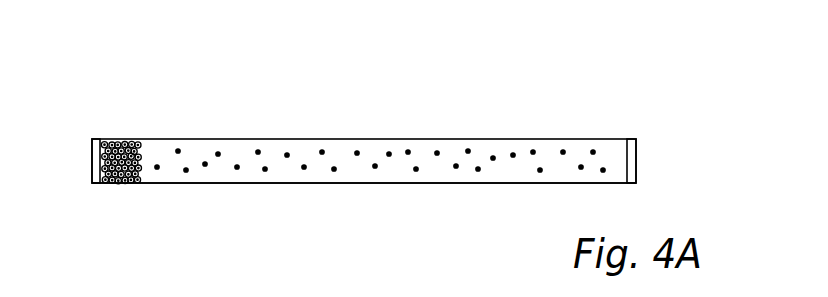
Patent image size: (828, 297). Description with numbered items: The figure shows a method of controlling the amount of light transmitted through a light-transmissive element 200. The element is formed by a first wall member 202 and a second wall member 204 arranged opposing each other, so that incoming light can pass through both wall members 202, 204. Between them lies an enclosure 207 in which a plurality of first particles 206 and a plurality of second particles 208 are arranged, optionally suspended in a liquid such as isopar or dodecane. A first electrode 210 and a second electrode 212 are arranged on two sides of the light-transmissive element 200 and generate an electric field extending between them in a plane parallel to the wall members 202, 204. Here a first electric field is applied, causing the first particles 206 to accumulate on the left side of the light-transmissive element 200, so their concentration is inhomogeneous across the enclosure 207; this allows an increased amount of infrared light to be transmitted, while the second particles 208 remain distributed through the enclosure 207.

The light-transmissive element 200 is at (605, 95).
The first wall member 202 is at (475, 138).
The second wall member 204 is at (432, 183).
The first particles 206 is at (99, 163).
The enclosure 207 is at (303, 150).
The second particles 208 is at (563, 152).
The first electrode 210 is at (633, 148).
The second electrode 212 is at (93, 140).